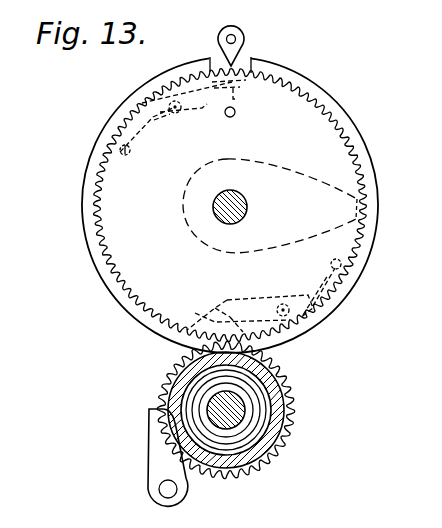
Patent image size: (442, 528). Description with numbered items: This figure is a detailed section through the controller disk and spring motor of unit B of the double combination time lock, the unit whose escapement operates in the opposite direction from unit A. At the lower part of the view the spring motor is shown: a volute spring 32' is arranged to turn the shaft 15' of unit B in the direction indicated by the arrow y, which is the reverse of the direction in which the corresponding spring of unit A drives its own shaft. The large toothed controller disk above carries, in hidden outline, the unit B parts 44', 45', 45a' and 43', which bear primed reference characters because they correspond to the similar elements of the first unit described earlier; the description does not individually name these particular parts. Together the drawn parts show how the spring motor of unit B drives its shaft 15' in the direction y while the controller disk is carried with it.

The pawl 44' is at (176, 118).
The pivot pin 45' is at (254, 130).
The pivot pin 45a' is at (188, 297).
The pawl 43' is at (264, 295).
The spring 32' is at (263, 409).
The shaft 15' is at (276, 410).
The arrow y is at (148, 369).